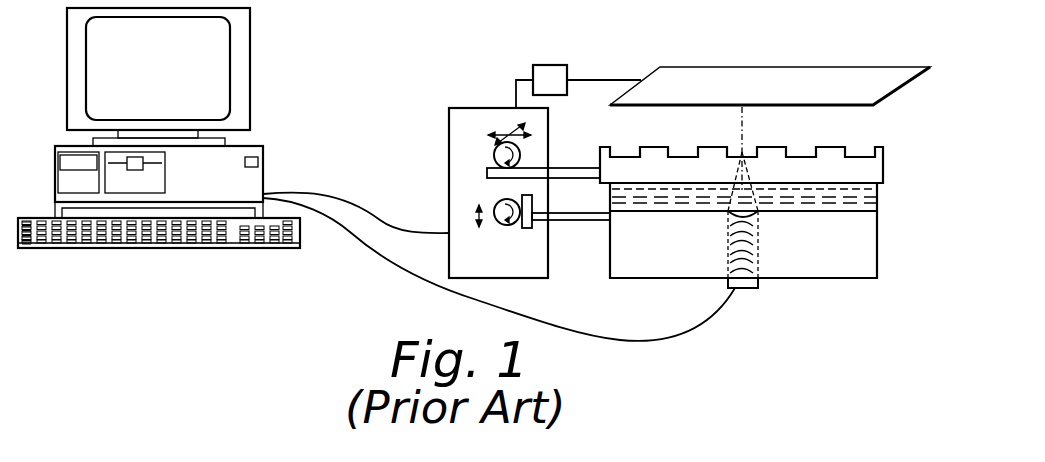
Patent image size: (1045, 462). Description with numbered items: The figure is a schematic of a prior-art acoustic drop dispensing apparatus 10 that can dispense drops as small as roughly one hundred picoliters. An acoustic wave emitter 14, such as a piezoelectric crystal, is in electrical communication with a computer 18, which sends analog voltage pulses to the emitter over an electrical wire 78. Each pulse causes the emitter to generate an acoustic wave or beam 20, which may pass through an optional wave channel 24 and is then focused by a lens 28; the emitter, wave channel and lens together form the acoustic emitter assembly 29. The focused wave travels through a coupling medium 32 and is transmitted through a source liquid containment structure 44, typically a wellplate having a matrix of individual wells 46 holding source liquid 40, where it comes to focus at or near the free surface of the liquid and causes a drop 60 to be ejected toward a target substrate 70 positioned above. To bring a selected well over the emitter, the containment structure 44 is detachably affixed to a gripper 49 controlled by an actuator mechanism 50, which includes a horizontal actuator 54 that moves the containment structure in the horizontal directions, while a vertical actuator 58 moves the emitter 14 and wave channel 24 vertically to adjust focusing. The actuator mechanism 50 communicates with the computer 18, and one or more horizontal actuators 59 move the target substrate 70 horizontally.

The acoustic drop dispensing apparatus 10 is at (770, 224).
The acoustic wave emitter 14 is at (750, 288).
The computer 18 is at (272, 160).
The acoustic wave or beam 20 is at (750, 238).
The wave channel 24 is at (652, 268).
The lens 28 is at (732, 215).
The acoustic emitter assembly 29 is at (881, 248).
The coupling medium 32 is at (872, 200).
The source liquid 40 is at (803, 143).
The source liquid containment structure 44 is at (883, 175).
The individual wells 46 is at (685, 152).
The gripper 49 is at (592, 167).
The actuator mechanism 50 is at (468, 108).
The horizontal actuator 54 is at (490, 157).
The vertical actuator 58 is at (493, 203).
The horizontal actuators 59 is at (548, 65).
The drop 60 is at (740, 142).
The target substrate 70 is at (835, 67).
The electrical wire 78 is at (612, 338).